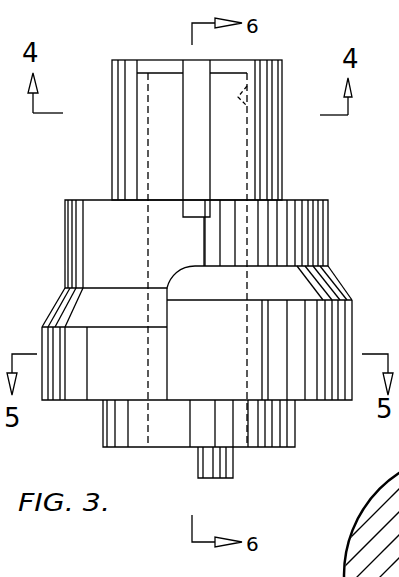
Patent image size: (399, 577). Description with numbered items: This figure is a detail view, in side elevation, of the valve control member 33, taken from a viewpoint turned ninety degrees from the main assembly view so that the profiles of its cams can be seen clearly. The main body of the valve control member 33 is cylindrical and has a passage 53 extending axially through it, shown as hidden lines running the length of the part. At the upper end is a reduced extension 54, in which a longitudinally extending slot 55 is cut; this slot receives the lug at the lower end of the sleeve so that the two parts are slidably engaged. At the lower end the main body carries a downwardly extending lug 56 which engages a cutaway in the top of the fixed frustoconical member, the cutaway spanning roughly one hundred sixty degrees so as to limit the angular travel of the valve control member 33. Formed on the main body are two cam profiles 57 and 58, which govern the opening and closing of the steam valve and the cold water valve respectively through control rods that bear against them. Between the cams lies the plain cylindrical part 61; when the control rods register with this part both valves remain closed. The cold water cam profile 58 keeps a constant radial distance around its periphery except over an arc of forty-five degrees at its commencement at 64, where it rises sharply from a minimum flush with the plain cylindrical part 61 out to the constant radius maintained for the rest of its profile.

The valve control member 33 is at (318, 231).
The passage 53 is at (265, 88).
The reduced extension 54 is at (265, 165).
The longitudinally extending slot 55 is at (208, 85).
The downwardly extending lug 56 is at (233, 468).
The cam profile 57 is at (58, 298).
The cam profile 58 is at (330, 293).
The plain cylindrical part 61 is at (76, 236).
The commencement of cam profile 64 is at (197, 344).